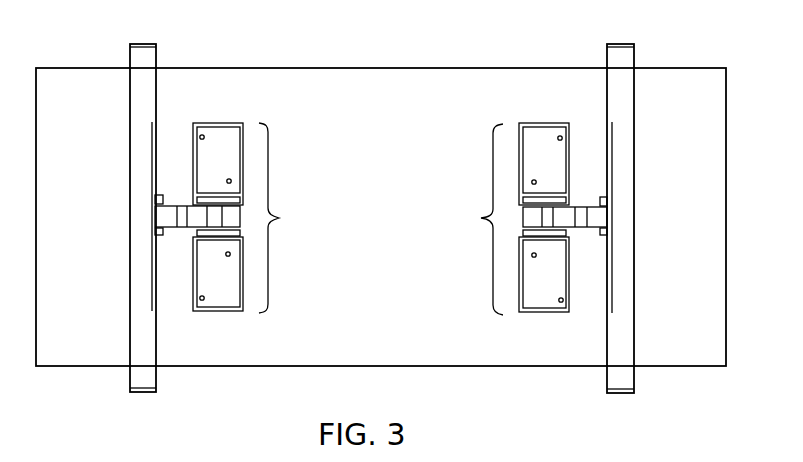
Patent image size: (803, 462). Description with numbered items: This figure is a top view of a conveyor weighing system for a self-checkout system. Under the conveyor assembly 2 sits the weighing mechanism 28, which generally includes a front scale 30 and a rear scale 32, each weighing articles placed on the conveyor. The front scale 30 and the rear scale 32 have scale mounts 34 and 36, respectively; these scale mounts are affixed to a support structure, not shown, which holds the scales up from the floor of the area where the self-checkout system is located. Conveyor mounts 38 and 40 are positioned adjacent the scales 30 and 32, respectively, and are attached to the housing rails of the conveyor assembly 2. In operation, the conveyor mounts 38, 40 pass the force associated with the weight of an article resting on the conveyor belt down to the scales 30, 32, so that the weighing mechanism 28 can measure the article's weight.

The conveyor assembly 2 is at (283, 68).
The weighing mechanism 28 is at (231, 198).
The front scale 30 is at (165, 224).
The rear scale 32 is at (597, 227).
The scale mount 34 is at (216, 123).
The scale mount 36 is at (547, 123).
The conveyor mount 38 is at (133, 56).
The conveyor mount 40 is at (630, 58).